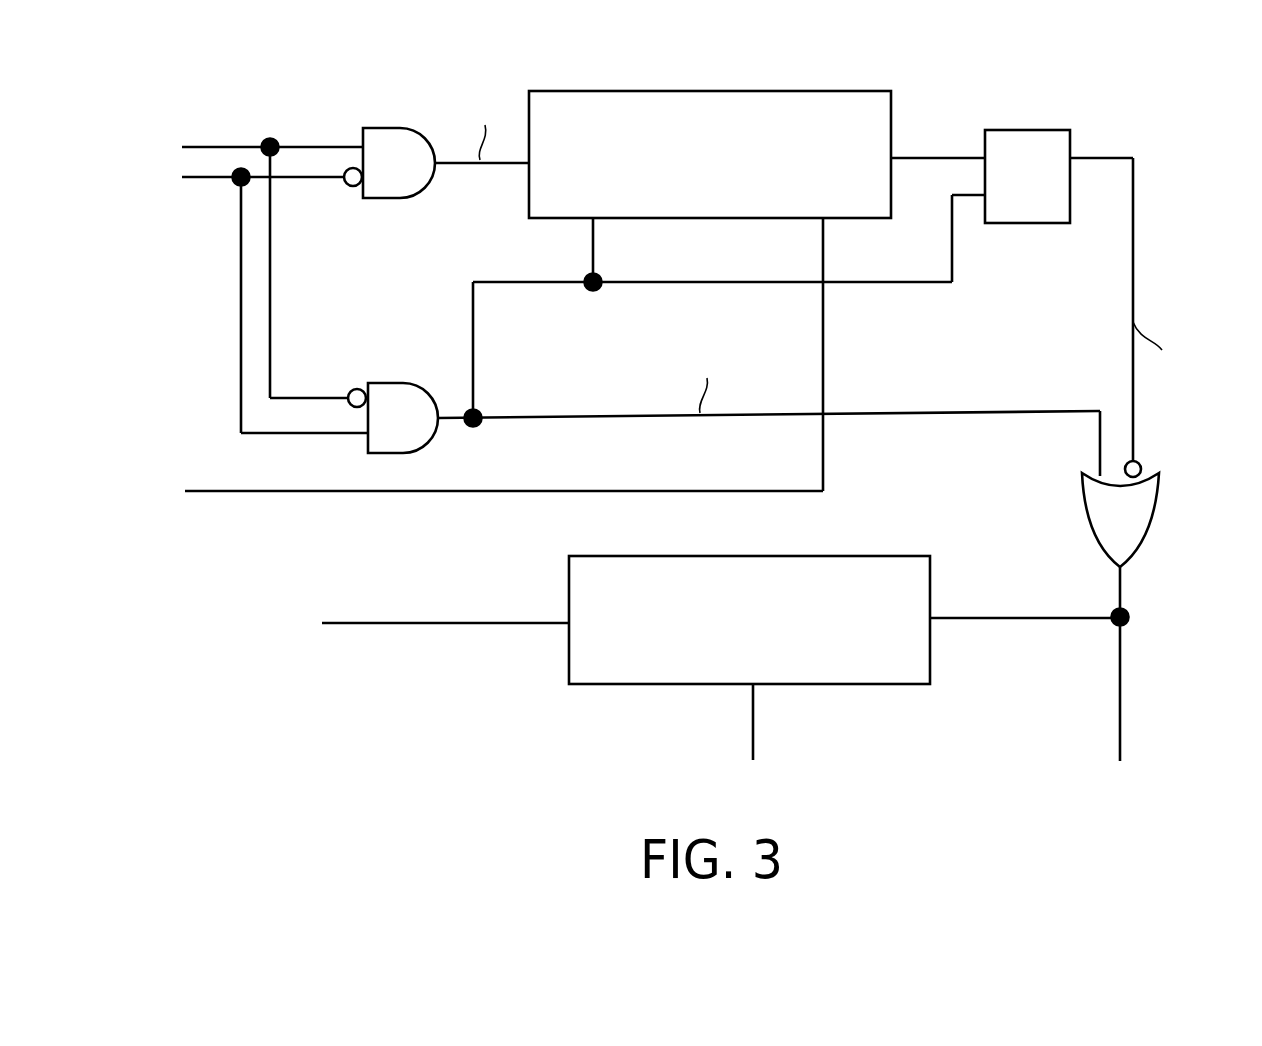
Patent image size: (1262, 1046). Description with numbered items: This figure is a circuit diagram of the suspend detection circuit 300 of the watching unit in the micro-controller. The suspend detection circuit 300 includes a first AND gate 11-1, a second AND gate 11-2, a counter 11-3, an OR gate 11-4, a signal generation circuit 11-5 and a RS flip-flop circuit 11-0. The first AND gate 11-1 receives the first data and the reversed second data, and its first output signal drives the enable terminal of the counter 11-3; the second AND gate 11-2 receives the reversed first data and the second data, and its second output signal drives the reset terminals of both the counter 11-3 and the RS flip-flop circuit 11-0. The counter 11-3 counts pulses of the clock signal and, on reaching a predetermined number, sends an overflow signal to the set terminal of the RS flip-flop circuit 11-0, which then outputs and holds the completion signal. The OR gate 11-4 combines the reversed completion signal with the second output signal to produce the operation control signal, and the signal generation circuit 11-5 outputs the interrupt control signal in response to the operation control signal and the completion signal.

The suspend detection circuit 300 is at (682, 419).
The RS flip-flop circuit 11-0 is at (1027, 143).
The first AND gate 11-1 is at (393, 138).
The second AND gate 11-2 is at (397, 393).
The counter 11-3 is at (847, 103).
The OR gate 11-4 is at (1140, 525).
The signal generation circuit 11-5 is at (882, 560).